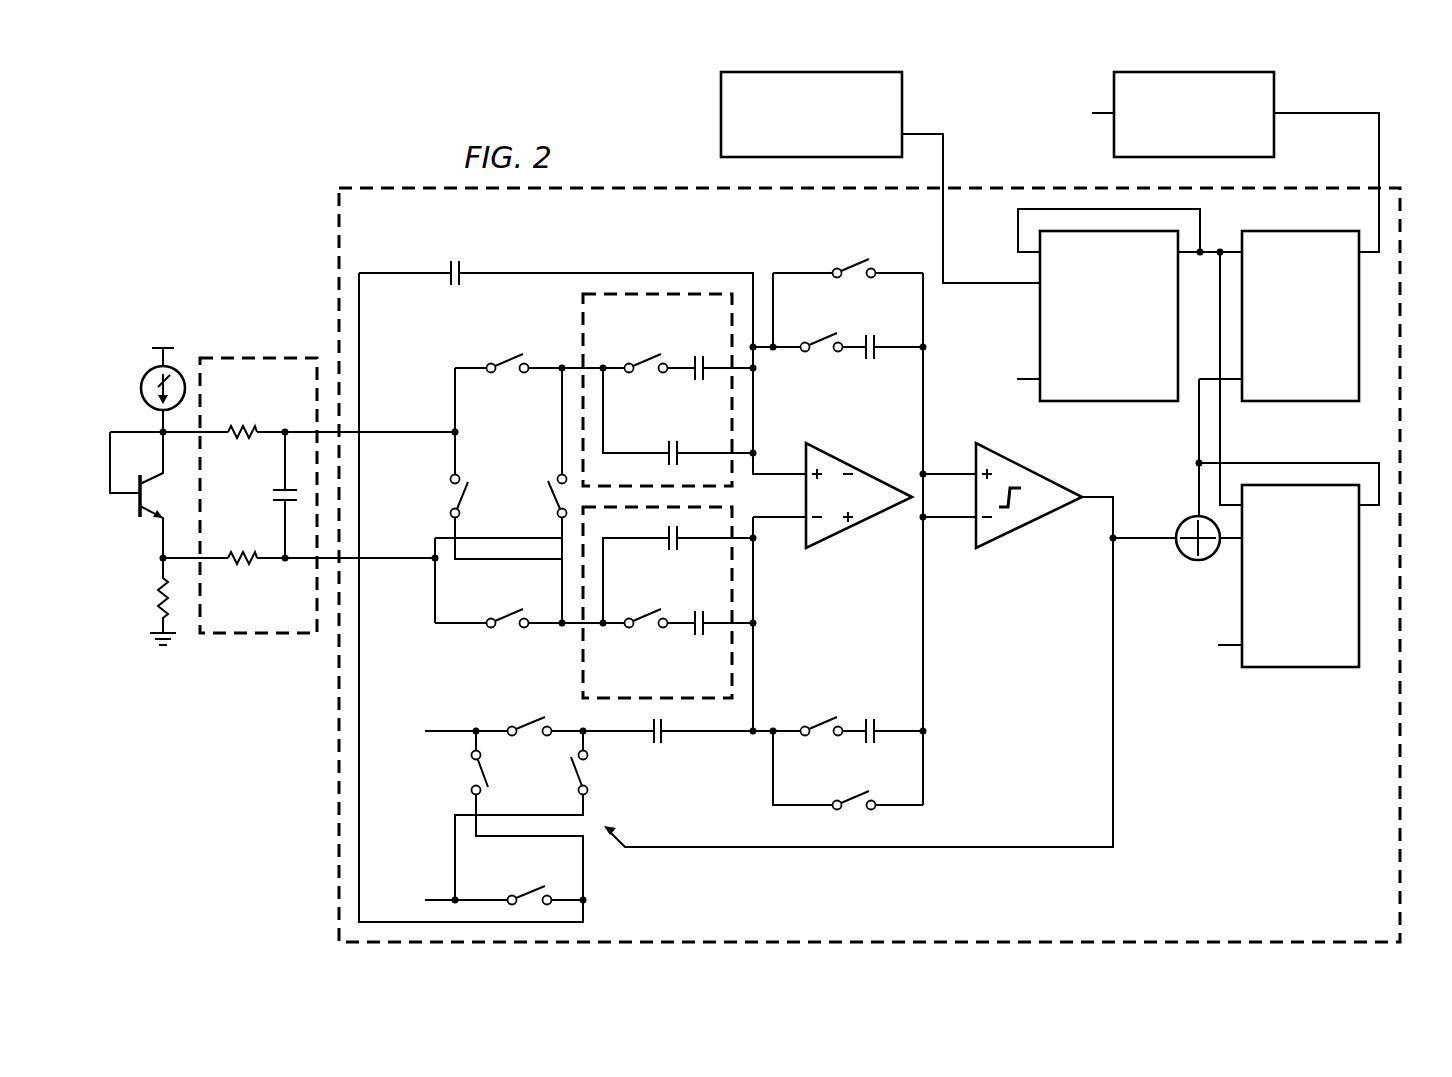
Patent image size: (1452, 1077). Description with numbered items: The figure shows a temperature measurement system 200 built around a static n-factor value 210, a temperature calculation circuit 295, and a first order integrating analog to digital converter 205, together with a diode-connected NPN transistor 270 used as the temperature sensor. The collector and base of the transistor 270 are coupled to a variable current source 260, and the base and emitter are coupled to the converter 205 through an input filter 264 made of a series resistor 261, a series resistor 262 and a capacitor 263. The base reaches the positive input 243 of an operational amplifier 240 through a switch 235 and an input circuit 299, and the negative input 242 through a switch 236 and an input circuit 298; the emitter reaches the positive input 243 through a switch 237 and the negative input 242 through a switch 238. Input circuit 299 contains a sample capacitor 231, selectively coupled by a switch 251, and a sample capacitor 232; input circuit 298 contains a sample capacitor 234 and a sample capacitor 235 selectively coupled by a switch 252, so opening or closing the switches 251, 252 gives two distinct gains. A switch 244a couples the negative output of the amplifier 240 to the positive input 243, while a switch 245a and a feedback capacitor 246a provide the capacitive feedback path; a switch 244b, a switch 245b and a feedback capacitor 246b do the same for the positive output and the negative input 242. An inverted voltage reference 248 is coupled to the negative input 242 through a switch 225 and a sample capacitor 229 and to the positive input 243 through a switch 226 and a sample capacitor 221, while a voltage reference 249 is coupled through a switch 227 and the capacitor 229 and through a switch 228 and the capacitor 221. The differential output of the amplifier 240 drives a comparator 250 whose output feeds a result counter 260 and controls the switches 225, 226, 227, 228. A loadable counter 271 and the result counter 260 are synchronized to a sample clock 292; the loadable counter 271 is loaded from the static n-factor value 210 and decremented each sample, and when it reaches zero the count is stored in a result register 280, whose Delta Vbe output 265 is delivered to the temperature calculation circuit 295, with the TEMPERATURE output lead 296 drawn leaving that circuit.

The temperature measurement system 200 is at (154, 152).
The analog to digital converter 205 is at (340, 773).
The static n-factor value 210 is at (720, 112).
The sample capacitor 221 is at (454, 261).
The switch 225 is at (534, 718).
The switch 226 is at (490, 767).
The switch 227 is at (570, 774).
The switch 228 is at (537, 886).
The sample capacitor 229 is at (658, 747).
The sample capacitor 231 is at (698, 354).
The sample capacitor 232 is at (672, 440).
The sample capacitor 234 is at (677, 552).
The switch / sample capacitor 235 is at (509, 355).
The switch 236 is at (464, 498).
The switch 237 is at (548, 503).
The switch 238 is at (511, 610).
The operational amplifier 240 is at (837, 454).
The negative input 242 is at (769, 522).
The positive input 243 is at (769, 472).
The switch 244a is at (850, 262).
The switch 244b is at (848, 793).
The switch 245a is at (823, 335).
The switch 245b is at (821, 718).
The feedback capacitor 246a is at (872, 335).
The feedback capacitor 246b is at (872, 718).
The inverted version of the voltage reference 248 is at (408, 715).
The voltage reference 249 is at (408, 885).
The comparator 250 is at (1032, 528).
The switch 251 is at (652, 355).
The switch 252 is at (652, 610).
The variable current source / result counter 260 is at (142, 387).
The series resistor 261 is at (246, 424).
The series resistor 262 is at (253, 568).
The capacitor 263 is at (268, 493).
The input filter 264 is at (251, 358).
The Delta Vbe 265 is at (1381, 145).
The transistor 270 is at (134, 507).
The loadable counter 271 is at (1108, 403).
The result register 280 is at (1298, 403).
The sample clock 292 is at (978, 350).
The temperature calculation circuit 295 is at (1278, 133).
The temperature output 296 is at (1023, 130).
The input circuit 298 is at (584, 652).
The input circuit 299 is at (584, 318).